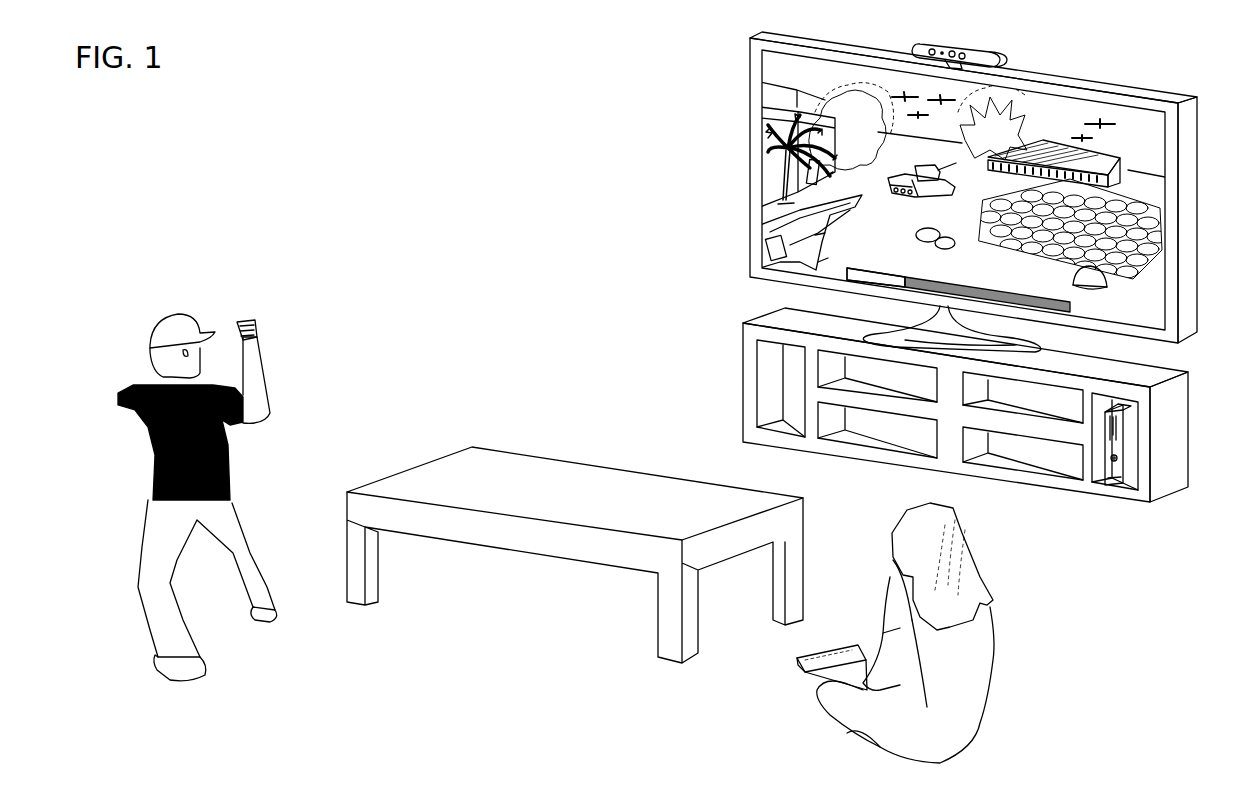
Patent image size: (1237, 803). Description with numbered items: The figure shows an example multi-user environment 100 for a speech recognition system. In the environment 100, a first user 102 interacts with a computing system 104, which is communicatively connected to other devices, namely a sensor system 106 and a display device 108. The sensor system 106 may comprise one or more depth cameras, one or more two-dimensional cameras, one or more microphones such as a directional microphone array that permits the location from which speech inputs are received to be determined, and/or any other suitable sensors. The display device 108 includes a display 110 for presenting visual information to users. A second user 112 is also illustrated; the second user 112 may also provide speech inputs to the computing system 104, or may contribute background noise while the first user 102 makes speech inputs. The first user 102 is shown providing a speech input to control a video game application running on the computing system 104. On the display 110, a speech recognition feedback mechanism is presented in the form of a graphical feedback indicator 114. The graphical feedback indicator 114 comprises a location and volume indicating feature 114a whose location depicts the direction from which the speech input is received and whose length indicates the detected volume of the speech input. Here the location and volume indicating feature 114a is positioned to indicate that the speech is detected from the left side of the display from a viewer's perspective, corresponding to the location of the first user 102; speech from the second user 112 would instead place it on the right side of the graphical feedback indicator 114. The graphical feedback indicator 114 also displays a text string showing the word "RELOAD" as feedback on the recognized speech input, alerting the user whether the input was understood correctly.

The multi-user environment 100 is at (347, 60).
The first user 102 is at (174, 297).
The computing system 104 is at (1124, 506).
The sensor system 106 is at (968, 52).
The display device 108 is at (974, 193).
The display 110 is at (1161, 320).
The second user 112 is at (1002, 553).
The graphical feedback indicator 114 is at (1086, 308).
The location and volume indicating feature 114a is at (840, 276).